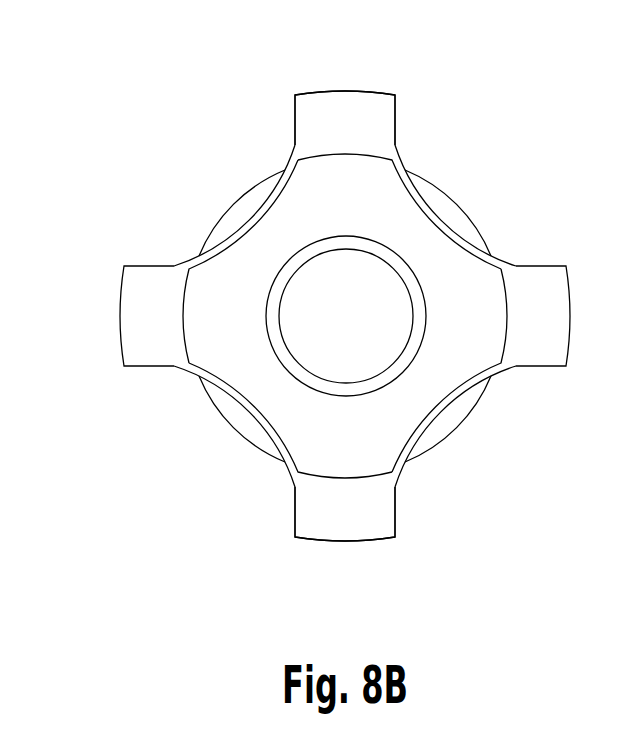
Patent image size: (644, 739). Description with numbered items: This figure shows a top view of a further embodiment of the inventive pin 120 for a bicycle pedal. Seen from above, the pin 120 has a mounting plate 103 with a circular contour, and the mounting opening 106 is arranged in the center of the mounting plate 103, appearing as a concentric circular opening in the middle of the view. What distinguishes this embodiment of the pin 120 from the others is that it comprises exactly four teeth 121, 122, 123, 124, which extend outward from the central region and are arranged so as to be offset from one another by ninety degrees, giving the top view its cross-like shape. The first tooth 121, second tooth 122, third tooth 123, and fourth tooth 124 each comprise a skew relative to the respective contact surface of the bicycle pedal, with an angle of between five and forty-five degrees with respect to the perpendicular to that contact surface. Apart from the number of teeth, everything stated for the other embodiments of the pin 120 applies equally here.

The pin 120 is at (183, 116).
The tooth 121 is at (347, 122).
The second tooth 122 is at (143, 323).
The third tooth 123 is at (345, 510).
The fourth tooth 124 is at (535, 317).
The mounting plate 103 is at (445, 215).
The mounting opening 106 is at (367, 332).